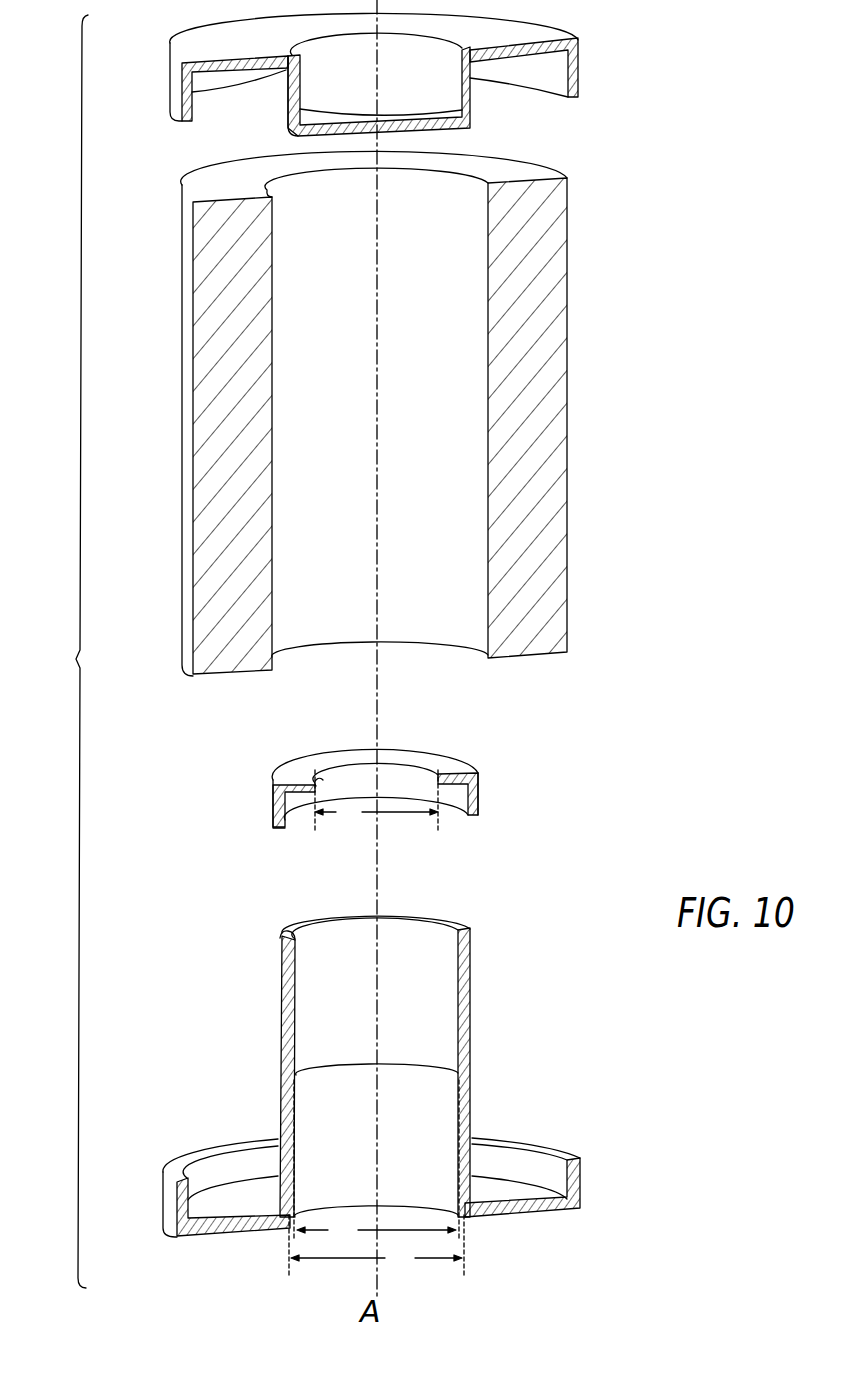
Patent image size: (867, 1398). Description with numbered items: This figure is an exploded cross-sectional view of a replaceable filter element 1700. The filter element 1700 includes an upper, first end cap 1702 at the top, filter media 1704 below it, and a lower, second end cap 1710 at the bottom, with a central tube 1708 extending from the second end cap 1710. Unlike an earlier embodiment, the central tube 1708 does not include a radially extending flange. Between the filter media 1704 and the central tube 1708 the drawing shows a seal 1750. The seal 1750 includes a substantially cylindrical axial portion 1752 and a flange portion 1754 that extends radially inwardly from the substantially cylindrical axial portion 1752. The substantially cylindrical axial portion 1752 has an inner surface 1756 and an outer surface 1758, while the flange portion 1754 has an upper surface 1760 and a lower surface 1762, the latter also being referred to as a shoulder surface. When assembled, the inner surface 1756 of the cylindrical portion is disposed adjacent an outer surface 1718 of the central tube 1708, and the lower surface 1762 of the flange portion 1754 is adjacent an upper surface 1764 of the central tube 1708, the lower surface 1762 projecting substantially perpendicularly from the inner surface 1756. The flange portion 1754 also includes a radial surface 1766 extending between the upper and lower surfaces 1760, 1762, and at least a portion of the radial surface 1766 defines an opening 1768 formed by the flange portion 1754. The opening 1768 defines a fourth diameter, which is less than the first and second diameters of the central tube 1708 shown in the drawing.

The filter element 1700 is at (56, 651).
The first end cap 1702 is at (606, 60).
The filter media 1704 is at (603, 381).
The central tube 1708 is at (550, 1026).
The second end cap 1710 is at (626, 1184).
The outer surface of the central tube 1718 is at (470, 966).
The seal 1750 is at (540, 797).
The substantially cylindrical axial portion 1752 is at (490, 814).
The flange portion 1754 is at (441, 750).
The inner surface 1756 is at (463, 805).
The outer surface 1758 is at (480, 785).
The upper surface 1760 is at (297, 784).
The lower surface 1762 is at (310, 793).
The upper surface of the central tube 1764 is at (285, 933).
The radial surface 1766 is at (321, 780).
The opening 1768 is at (395, 750).